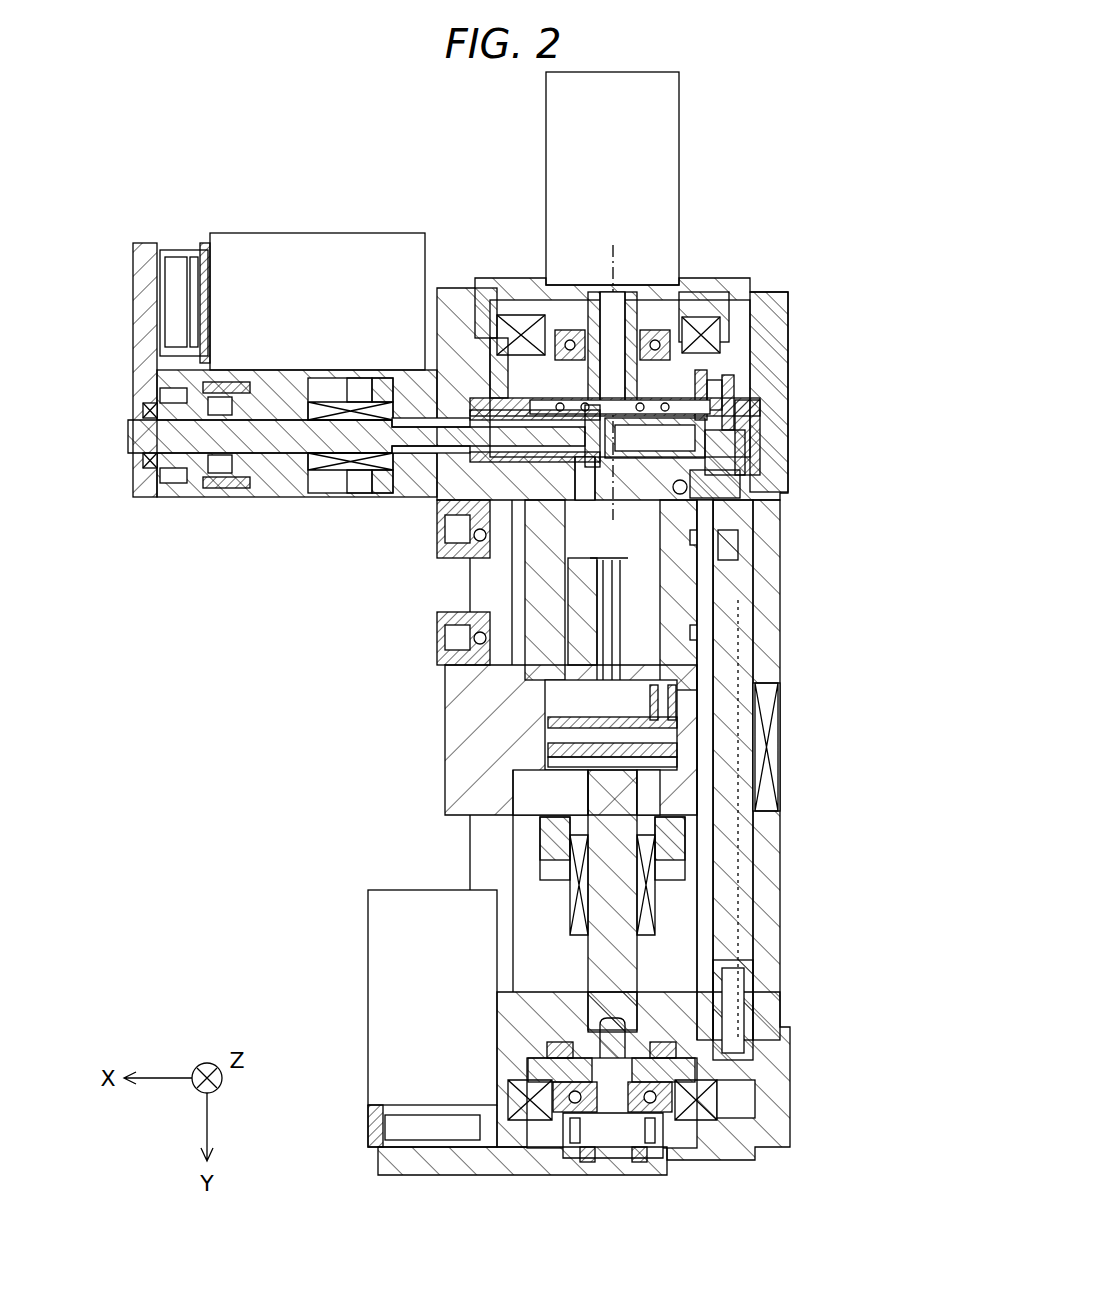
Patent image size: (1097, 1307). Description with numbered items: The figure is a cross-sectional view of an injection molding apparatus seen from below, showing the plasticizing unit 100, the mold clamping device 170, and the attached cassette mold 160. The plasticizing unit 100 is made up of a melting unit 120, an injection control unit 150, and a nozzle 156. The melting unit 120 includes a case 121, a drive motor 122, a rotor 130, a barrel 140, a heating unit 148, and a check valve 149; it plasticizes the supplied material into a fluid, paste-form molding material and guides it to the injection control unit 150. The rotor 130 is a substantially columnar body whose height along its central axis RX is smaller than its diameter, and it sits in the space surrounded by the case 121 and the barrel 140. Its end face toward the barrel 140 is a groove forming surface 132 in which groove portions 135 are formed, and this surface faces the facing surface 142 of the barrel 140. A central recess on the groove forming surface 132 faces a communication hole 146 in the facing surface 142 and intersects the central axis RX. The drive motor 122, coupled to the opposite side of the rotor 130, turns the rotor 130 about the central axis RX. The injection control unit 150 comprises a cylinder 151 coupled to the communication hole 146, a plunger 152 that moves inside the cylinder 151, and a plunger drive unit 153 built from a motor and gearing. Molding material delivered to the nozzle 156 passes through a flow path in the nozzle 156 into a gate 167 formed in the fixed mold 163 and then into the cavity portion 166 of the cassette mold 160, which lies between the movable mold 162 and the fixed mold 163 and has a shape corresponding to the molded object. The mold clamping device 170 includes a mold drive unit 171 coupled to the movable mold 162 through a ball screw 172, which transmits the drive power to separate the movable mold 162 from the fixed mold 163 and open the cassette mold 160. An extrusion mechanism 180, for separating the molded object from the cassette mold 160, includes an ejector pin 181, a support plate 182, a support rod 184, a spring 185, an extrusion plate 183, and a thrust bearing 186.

The plasticizing unit 100 is at (455, 195).
The melting unit 120 is at (790, 262).
The case 121 is at (752, 340).
The drive motor 122 is at (680, 175).
The rotor 130 is at (512, 305).
The groove forming surface 132 is at (762, 410).
The groove portions 135 is at (728, 330).
The barrel 140 is at (695, 440).
The facing surface 142 is at (725, 375).
The communication hole 146 is at (748, 455).
The heating unit 148 is at (467, 395).
The check valve 149 is at (645, 300).
The injection control unit 150 is at (294, 567).
The cylinder 151 is at (550, 437).
The plunger 152 is at (262, 457).
The plunger drive unit 153 is at (316, 248).
The nozzle 156 is at (735, 530).
The cassette mold 160 is at (385, 560).
The movable mold 162 is at (472, 605).
The fixed mold 163 is at (472, 565).
The cavity portion 166 is at (622, 578).
The gate 167 is at (614, 630).
The mold clamping device 170 is at (410, 880).
The mold drive unit 171 is at (368, 985).
The ball screw 172 is at (625, 960).
The extrusion mechanism 180 is at (322, 742).
The ejector pin 181 is at (680, 650).
The support plate 182 is at (560, 722).
The extrusion plate 183 is at (548, 750).
The support rod 184 is at (682, 680).
The spring 185 is at (668, 712).
The thrust bearing 186 is at (540, 762).
The central axis RX is at (618, 252).